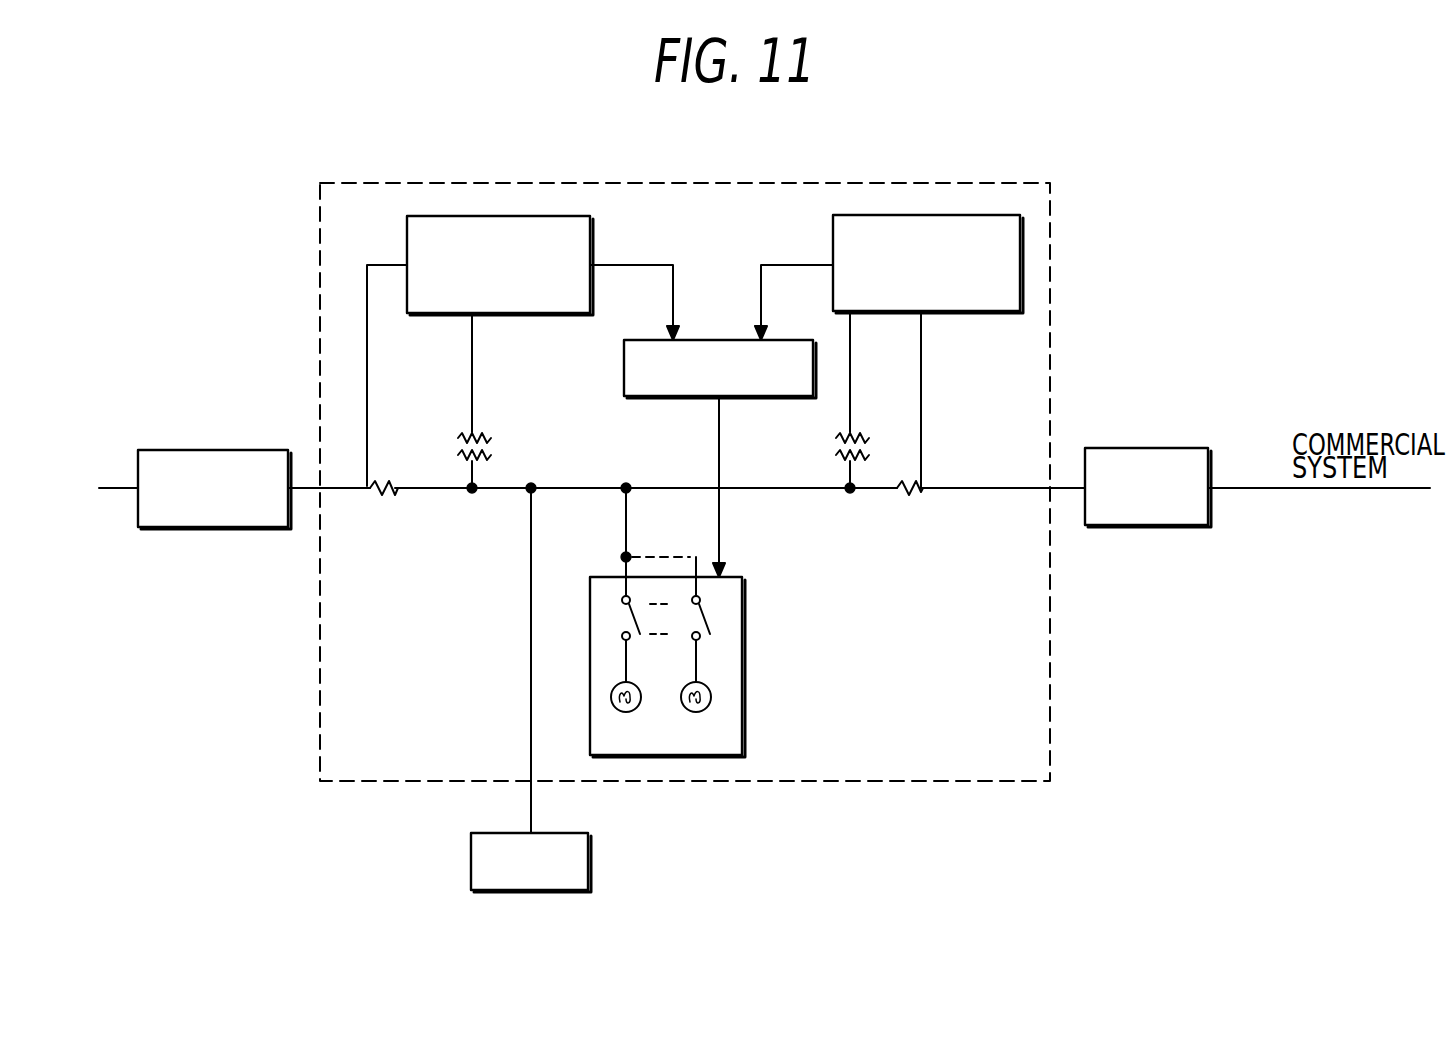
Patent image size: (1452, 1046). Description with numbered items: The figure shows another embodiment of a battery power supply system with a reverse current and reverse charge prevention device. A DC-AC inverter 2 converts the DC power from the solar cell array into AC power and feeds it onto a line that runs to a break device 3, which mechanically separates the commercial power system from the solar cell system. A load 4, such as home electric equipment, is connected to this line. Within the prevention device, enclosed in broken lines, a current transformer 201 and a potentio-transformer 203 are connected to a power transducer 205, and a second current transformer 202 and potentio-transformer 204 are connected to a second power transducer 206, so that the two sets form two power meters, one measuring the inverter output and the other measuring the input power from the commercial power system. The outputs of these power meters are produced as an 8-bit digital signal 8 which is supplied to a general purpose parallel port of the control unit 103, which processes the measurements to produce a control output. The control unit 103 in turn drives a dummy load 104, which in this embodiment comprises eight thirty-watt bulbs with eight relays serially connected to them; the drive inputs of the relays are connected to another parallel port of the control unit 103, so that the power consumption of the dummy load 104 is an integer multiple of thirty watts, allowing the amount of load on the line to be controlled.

The inverter 2 is at (230, 450).
The break device 3 is at (1198, 526).
The load 4 is at (590, 848).
The 8-bit digital signal 8 is at (628, 271).
The control unit 103 is at (624, 356).
The dummy load 104 is at (742, 720).
The current transformer 201 is at (390, 496).
The current transformer 202 is at (908, 494).
The potentio-transformer 203 is at (492, 452).
The potentio-transformer 204 is at (834, 448).
The power transducer 205 is at (540, 216).
The power transducer 206 is at (975, 215).